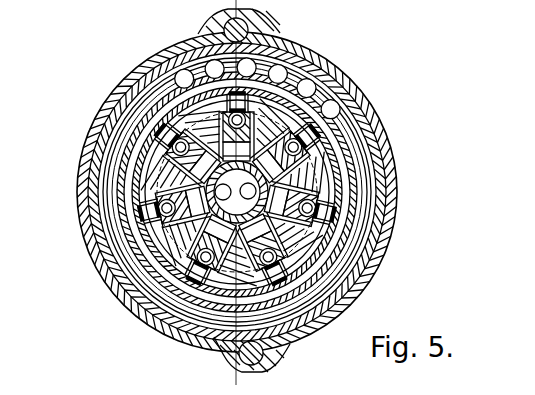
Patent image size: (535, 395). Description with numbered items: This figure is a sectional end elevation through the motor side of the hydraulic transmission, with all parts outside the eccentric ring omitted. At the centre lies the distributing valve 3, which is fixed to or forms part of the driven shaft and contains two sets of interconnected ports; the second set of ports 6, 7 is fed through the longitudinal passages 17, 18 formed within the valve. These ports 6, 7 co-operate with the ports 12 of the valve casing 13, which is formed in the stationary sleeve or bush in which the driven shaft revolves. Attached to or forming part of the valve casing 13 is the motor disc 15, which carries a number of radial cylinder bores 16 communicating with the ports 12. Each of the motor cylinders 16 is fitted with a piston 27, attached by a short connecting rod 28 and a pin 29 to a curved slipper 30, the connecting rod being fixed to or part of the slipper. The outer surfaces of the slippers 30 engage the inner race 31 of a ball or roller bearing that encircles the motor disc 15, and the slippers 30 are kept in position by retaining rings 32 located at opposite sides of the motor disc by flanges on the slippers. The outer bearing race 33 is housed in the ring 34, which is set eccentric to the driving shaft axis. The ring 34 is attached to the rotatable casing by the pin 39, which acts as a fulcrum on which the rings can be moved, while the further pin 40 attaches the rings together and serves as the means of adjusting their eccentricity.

The distributing valve 3 is at (265, 186).
The port 6 is at (222, 175).
The port 7 is at (292, 228).
The ports 12 is at (166, 248).
The valve casing 13 is at (195, 262).
The motor disc 15 is at (338, 86).
The radial cylinder bores 16 is at (320, 211).
The longitudinal passage 17 is at (215, 190).
The longitudinal passage 18 is at (262, 192).
The piston 27 is at (208, 122).
The connecting rod 28 is at (282, 66).
The pin 29 is at (162, 72).
The curved slipper 30 is at (258, 60).
The inner race 31 is at (315, 66).
The retaining rings 32 is at (128, 282).
The outer bearing race 33 is at (352, 108).
The ring 34 is at (374, 128).
The pin 39 is at (226, 26).
The pin 40 is at (278, 357).